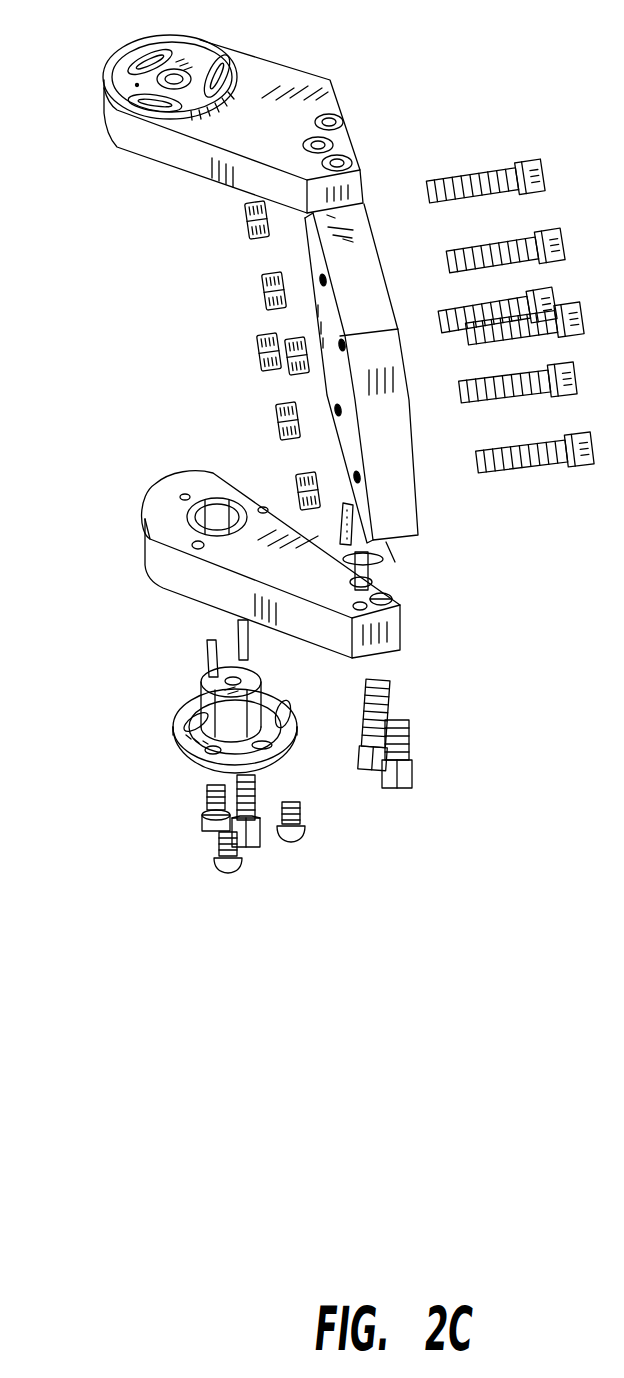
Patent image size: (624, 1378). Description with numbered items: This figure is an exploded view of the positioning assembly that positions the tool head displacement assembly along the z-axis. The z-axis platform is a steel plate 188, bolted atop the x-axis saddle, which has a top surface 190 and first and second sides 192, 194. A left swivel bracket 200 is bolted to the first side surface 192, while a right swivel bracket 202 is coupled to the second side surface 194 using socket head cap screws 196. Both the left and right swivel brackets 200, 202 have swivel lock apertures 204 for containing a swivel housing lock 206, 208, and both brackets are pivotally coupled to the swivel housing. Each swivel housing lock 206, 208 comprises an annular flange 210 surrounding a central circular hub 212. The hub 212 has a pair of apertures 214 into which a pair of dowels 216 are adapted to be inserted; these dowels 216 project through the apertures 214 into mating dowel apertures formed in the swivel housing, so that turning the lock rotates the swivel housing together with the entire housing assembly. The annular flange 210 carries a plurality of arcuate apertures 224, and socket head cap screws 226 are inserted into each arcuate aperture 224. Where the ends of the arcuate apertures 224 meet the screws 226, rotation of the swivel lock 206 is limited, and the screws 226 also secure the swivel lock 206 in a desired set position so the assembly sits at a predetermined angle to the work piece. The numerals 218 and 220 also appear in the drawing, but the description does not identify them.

The steel plate 188 is at (331, 268).
The top surface 190 is at (311, 327).
The first side 192 is at (371, 318).
The second side 194 is at (393, 545).
The socket head cap screws 196 is at (403, 788).
The left swivel bracket 200 is at (391, 638).
The right swivel bracket 202 is at (173, 153).
The swivel lock apertures 204 is at (210, 506).
The swivel housing lock 206 is at (167, 718).
The swivel housing lock 208 is at (194, 52).
The annular flange 210 is at (127, 86).
The central circular hub 212 is at (180, 707).
The apertures 214 is at (187, 697).
The dowels 216 is at (207, 672).
The boss 218 is at (197, 690).
The pin 220 is at (213, 638).
The arcuate apertures 224 is at (183, 745).
The socket head cap screws 226 is at (302, 843).